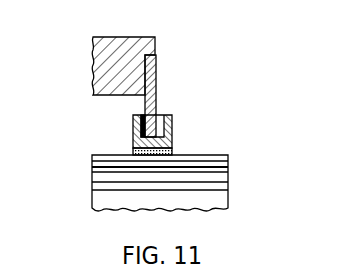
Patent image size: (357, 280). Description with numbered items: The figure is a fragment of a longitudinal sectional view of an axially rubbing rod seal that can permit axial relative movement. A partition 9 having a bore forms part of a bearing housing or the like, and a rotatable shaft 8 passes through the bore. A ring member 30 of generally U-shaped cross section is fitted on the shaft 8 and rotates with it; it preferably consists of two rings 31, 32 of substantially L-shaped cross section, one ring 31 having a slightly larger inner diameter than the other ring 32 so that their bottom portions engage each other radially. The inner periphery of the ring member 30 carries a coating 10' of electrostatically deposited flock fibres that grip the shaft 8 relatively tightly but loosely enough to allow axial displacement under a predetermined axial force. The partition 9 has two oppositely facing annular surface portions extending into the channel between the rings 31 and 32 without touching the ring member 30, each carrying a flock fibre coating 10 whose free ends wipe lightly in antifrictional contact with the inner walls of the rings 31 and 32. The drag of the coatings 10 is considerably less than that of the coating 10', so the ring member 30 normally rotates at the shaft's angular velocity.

The rotatable shaft 8 is at (230, 170).
The partition 9 is at (157, 74).
The coating of electrostatically deposited flock fibres 10 is at (141, 96).
The coating of electrostatically deposited flock fibers 10' is at (218, 141).
The ring member 30 is at (128, 146).
The ring 31 is at (172, 125).
The ring 32 is at (141, 126).